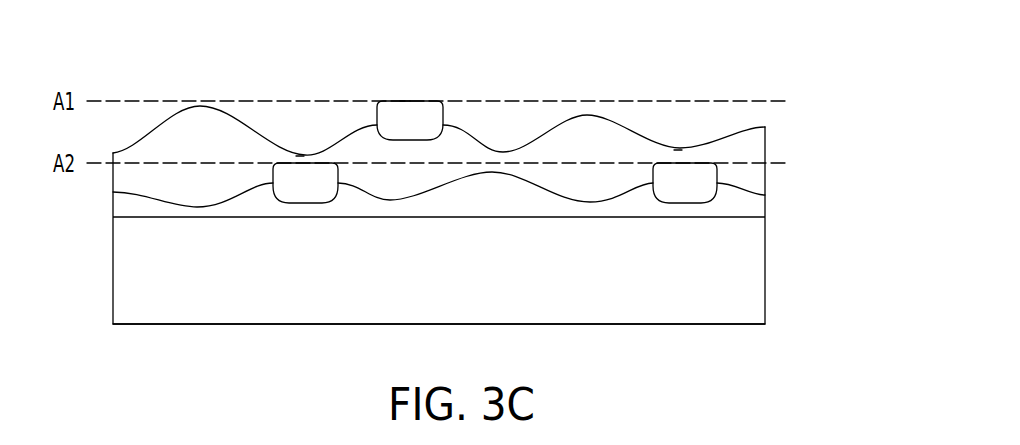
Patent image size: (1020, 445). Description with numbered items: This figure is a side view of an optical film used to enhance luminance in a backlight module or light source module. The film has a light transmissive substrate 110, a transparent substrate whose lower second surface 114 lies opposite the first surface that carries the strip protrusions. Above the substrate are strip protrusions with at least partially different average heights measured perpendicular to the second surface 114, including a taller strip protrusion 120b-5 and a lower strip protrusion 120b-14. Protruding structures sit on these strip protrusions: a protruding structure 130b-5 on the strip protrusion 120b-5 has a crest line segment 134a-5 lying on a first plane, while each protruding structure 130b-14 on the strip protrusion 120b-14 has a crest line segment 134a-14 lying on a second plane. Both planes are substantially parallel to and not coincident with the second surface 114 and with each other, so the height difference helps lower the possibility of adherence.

The light transmissive substrate 110 is at (713, 282).
The second surface 114 is at (723, 325).
The strip protrusion 120b-14 is at (745, 205).
The strip protrusion 120b-5 is at (747, 148).
The protruding structure 130b-14 is at (318, 180).
The protruding structure 130b-5 is at (418, 118).
The crest line segment 134a-14 is at (300, 160).
The crest line segment 134a-5 is at (405, 100).